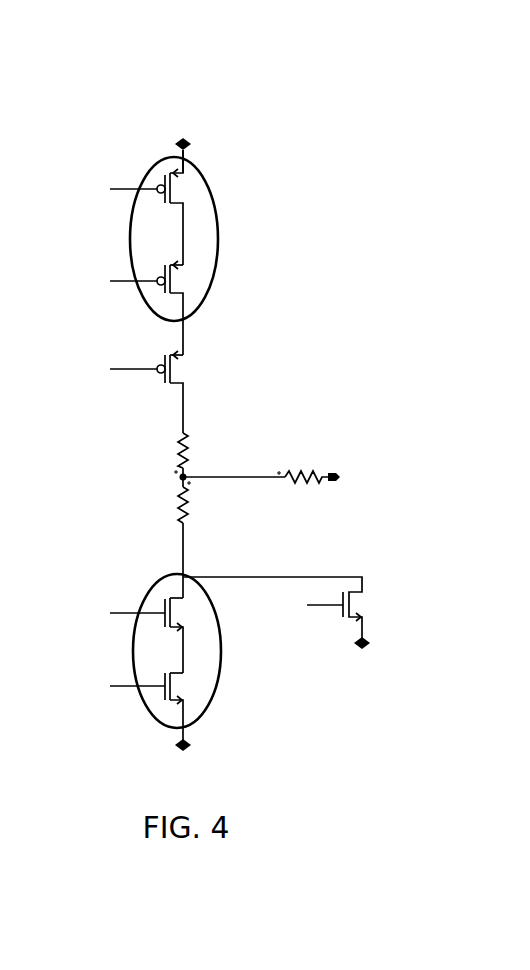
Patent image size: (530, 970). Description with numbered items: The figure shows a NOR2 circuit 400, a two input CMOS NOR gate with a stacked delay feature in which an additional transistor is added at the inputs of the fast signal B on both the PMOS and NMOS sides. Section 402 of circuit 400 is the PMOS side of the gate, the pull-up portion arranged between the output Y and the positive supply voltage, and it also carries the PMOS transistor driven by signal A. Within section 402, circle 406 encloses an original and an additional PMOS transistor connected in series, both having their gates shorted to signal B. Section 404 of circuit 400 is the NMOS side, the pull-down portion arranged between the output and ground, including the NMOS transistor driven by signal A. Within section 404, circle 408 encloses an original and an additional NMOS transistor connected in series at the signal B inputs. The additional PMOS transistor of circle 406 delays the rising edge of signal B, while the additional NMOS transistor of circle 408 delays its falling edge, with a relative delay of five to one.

The circuit 400 is at (243, 92).
The section 402 is at (100, 143).
The section 404 is at (100, 484).
The circle 406 is at (217, 180).
The circle 408 is at (222, 648).